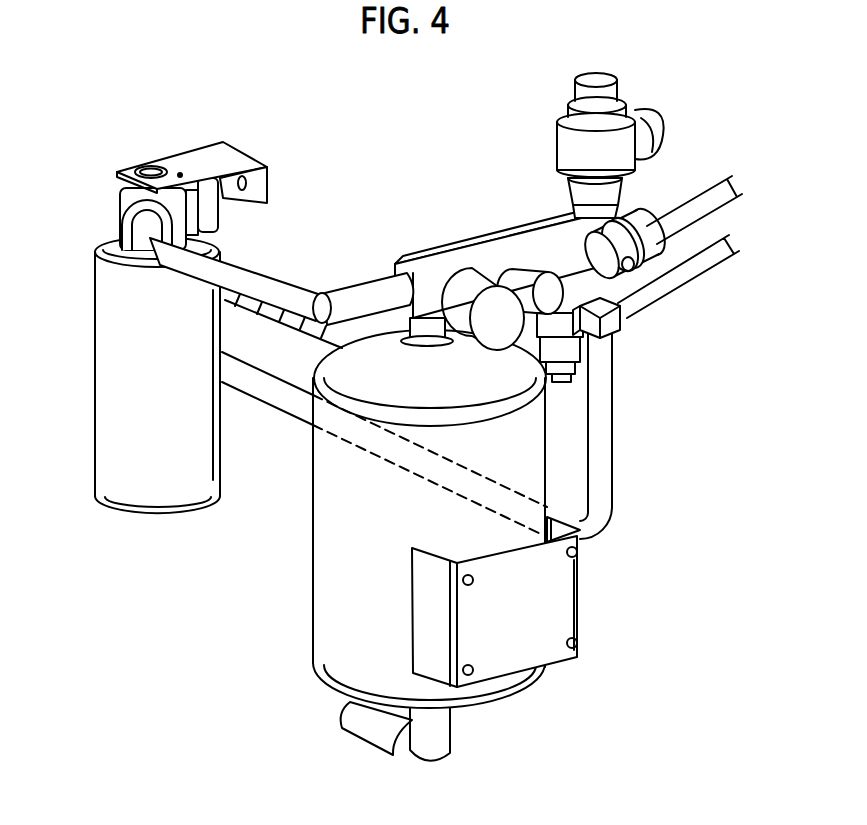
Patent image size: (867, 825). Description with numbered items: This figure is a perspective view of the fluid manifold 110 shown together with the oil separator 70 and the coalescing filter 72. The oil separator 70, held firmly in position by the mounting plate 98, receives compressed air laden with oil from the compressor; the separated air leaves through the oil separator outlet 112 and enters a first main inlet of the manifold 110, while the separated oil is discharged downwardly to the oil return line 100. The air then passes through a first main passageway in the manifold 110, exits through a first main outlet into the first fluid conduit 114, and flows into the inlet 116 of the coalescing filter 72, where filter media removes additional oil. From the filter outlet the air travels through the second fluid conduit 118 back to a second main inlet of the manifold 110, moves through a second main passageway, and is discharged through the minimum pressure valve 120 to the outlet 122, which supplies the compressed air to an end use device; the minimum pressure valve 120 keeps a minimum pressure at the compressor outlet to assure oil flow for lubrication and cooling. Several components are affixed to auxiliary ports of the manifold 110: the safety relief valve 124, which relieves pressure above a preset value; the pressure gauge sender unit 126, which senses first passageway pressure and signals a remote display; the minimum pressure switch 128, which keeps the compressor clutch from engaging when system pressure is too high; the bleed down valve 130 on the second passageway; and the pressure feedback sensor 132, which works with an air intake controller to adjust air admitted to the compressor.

The oil separator 70 is at (325, 600).
The coalescing filter 72 is at (113, 417).
The mounting plate 98 is at (557, 602).
The oil return line 100 is at (443, 753).
The manifold 110 is at (490, 233).
The oil separator outlet 112 is at (423, 338).
The first fluid conduit 114 is at (278, 293).
The inlet 116 is at (140, 227).
The second fluid conduit 118 is at (262, 397).
The minimum pressure valve 120 is at (572, 150).
The outlet 122 is at (658, 120).
The safety relief valve 124 is at (352, 282).
The pressure gauge sender unit 126 is at (497, 328).
The minimum pressure switch 128 is at (622, 327).
The bleed down valve 130 is at (590, 352).
The pressure feedback sensor 132 is at (650, 226).